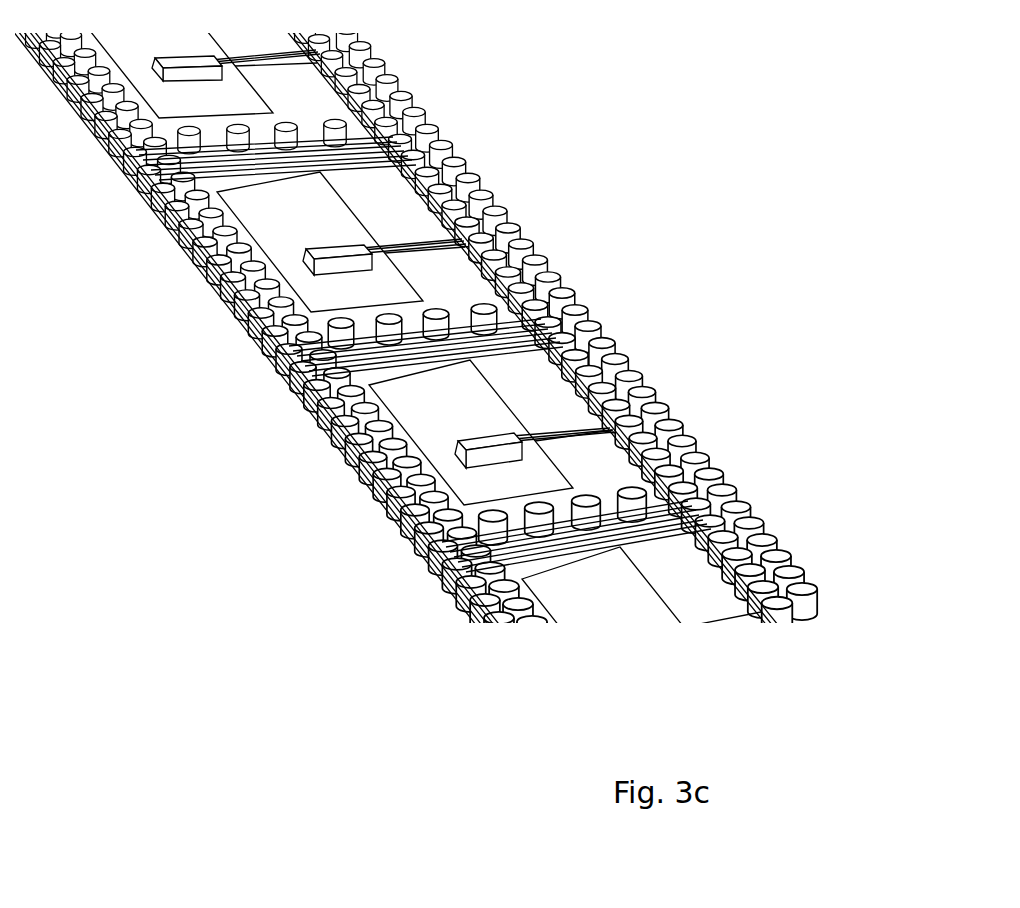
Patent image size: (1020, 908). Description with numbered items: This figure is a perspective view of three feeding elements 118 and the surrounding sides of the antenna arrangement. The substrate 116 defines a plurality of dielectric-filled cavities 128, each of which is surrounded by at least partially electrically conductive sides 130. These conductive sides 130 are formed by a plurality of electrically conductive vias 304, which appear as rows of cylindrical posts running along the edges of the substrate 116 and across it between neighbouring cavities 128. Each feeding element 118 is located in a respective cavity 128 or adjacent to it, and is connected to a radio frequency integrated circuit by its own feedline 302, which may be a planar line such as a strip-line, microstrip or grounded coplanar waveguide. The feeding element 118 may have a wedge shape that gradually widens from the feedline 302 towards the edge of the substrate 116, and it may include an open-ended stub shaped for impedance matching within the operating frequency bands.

The substrate 116 is at (408, 376).
The feeding element 118 is at (168, 86).
The dielectric-filled cavity 128 is at (307, 87).
The electrically conductive sides 130 is at (252, 371).
The feedline 302 is at (477, 223).
The conductive vias 304 is at (457, 298).